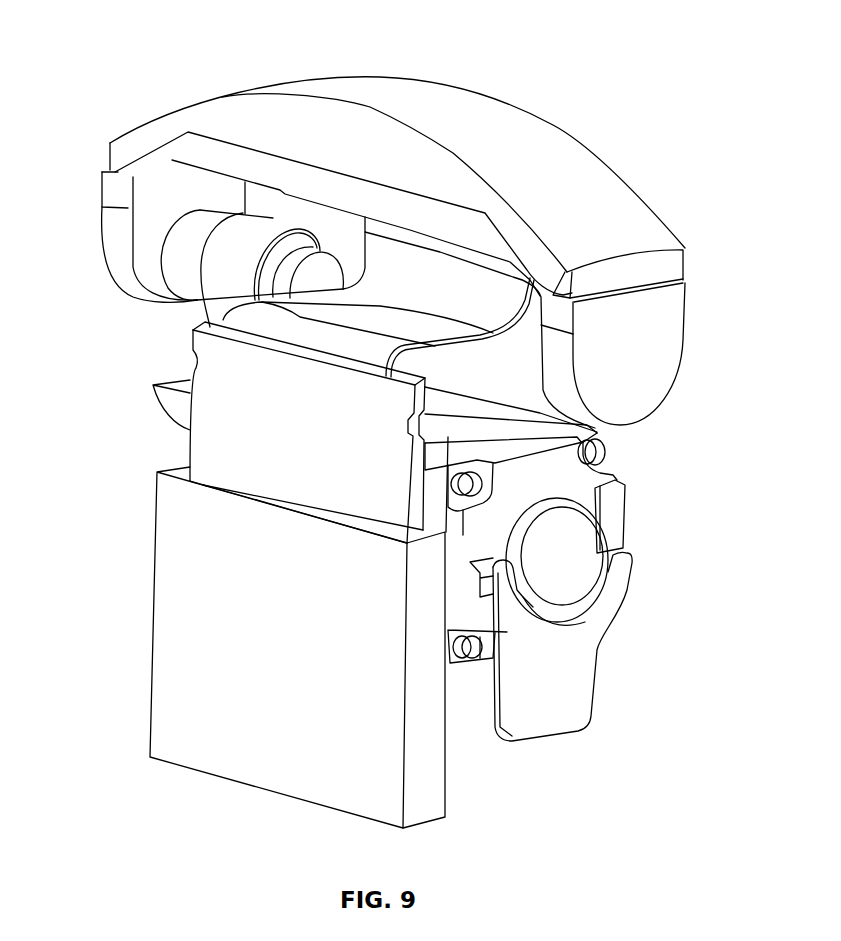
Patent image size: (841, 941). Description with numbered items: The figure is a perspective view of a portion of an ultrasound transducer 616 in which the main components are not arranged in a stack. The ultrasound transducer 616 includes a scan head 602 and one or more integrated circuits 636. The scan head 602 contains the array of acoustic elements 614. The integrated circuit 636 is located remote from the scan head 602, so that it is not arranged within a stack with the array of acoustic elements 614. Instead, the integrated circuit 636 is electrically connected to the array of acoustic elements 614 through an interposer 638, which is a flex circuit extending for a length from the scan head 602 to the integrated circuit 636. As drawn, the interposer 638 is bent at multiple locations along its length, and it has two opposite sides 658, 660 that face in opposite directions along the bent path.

The ultrasound transducer 616 is at (112, 38).
The array of acoustic elements 614 is at (571, 175).
The scan head 602 is at (684, 238).
The side of interposer 658 is at (346, 243).
The interposer 638 is at (482, 339).
The side of interposer 660 is at (445, 358).
The integrated circuit 636 is at (178, 436).